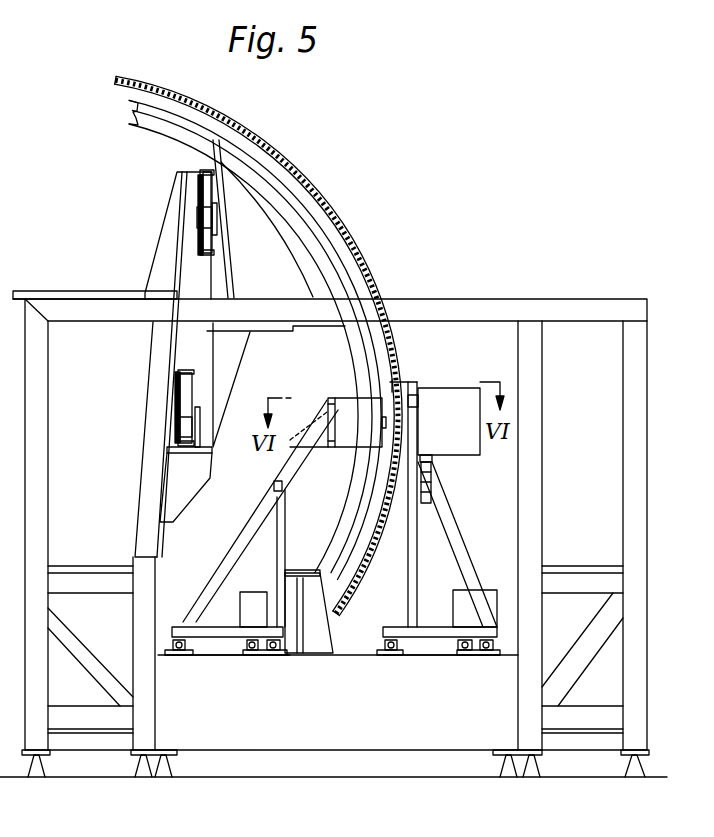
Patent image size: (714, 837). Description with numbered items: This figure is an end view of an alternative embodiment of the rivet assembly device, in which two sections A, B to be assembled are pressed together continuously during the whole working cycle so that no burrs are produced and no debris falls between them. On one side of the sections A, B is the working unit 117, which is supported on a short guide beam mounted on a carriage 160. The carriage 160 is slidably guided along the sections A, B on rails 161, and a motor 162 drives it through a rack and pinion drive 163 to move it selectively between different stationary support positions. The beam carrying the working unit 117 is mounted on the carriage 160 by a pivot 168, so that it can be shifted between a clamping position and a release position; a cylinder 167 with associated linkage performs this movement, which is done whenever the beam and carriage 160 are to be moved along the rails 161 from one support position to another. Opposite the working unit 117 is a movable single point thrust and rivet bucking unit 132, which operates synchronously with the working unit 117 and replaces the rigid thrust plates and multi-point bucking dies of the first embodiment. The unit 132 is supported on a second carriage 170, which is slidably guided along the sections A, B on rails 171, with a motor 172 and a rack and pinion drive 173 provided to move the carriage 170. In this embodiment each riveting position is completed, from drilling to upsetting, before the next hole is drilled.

The section A is at (368, 262).
The section B is at (352, 586).
The working unit 117 is at (456, 395).
The single point thrust and rivet bucking unit 132 is at (348, 405).
The carriage 160 is at (456, 553).
The rails 161 is at (388, 657).
The motor 162 is at (460, 599).
The rack and pinion drive 163 is at (466, 656).
The cylinder 167 is at (431, 481).
The pivot 168 is at (411, 396).
The carriage 170 is at (250, 535).
The rails 171 is at (178, 657).
The motor 172 is at (262, 573).
The rack and pinion drive 173 is at (250, 657).